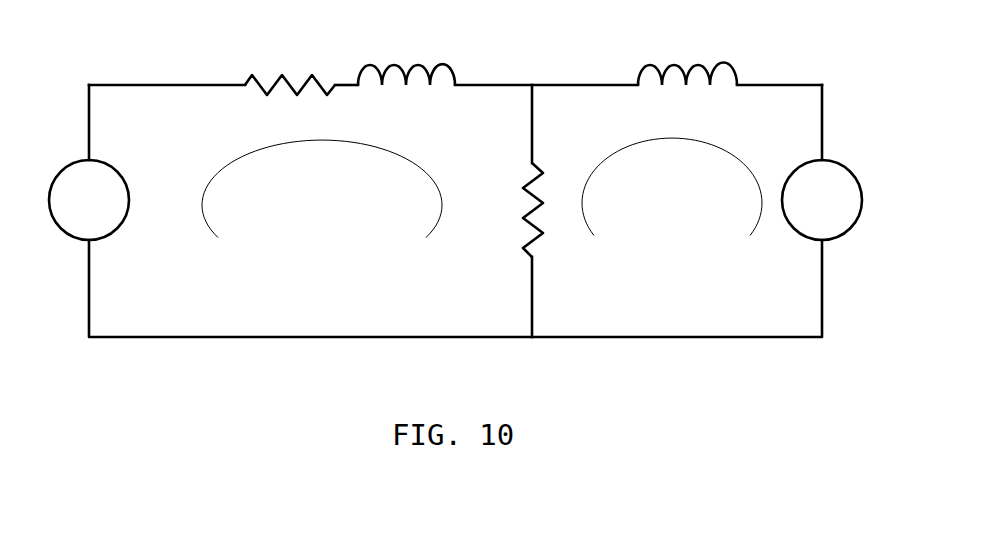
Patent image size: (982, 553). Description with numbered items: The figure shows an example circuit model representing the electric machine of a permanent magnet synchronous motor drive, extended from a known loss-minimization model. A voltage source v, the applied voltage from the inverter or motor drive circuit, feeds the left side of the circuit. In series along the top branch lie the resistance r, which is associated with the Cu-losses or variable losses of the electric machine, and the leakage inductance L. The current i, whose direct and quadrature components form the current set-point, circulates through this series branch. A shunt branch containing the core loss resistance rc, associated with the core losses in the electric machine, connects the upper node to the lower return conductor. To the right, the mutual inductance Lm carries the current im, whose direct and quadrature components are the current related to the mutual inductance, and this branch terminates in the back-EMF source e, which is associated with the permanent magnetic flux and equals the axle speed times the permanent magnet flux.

The resistance r is at (290, 64).
The leakage inductance L is at (406, 59).
The mutual inductance Lm is at (687, 59).
The core loss resistance rc is at (511, 210).
The applied voltage v is at (89, 200).
The back-EMF e is at (822, 200).
The current i is at (322, 188).
The mutual inductance current im is at (672, 186).